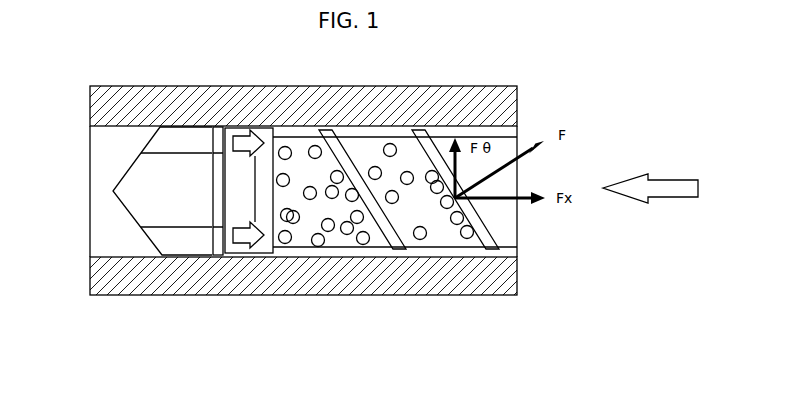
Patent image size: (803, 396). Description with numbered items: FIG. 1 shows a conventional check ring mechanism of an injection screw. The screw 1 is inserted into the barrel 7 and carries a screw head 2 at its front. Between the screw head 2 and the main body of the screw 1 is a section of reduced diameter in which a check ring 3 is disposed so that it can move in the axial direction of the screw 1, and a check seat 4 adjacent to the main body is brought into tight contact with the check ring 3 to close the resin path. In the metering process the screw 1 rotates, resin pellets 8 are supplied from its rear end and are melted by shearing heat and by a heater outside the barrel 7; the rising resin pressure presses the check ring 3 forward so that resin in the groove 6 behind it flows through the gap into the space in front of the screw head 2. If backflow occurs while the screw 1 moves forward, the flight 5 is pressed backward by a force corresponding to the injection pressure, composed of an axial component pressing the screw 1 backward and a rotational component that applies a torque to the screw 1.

The screw 1 is at (375, 143).
The screw head 2 is at (178, 145).
The check ring 3 is at (221, 250).
The check seat 4 is at (262, 250).
The flight 5 is at (410, 248).
The groove 6 is at (378, 248).
The barrel 7 is at (223, 90).
The resin pellets 8 is at (319, 250).